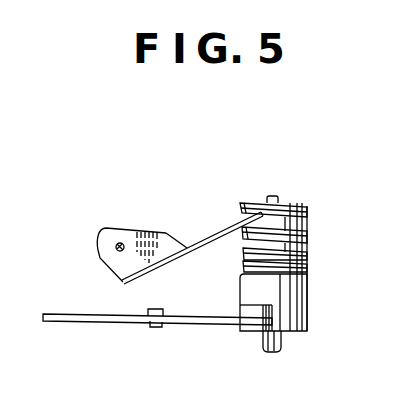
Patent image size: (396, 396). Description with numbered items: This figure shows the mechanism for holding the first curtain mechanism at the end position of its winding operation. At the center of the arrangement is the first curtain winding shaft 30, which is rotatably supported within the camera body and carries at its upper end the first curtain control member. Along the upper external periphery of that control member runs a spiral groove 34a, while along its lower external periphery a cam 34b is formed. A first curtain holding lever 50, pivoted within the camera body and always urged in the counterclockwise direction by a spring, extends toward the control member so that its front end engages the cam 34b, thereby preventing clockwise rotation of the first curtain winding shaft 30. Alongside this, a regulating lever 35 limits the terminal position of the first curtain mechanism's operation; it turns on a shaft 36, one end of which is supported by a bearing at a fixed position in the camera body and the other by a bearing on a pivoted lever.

The first curtain winding shaft 30 is at (274, 196).
The spiral groove 34a is at (304, 243).
The cam 34b is at (252, 328).
The regulating lever 35 is at (163, 241).
The shaft 36 is at (120, 242).
The first curtain holding lever 50 is at (107, 322).